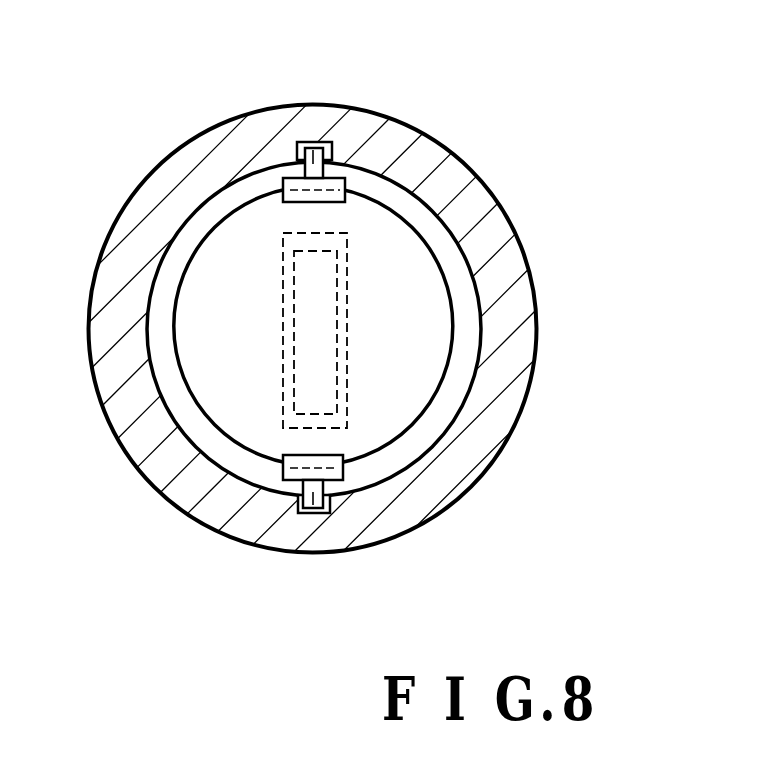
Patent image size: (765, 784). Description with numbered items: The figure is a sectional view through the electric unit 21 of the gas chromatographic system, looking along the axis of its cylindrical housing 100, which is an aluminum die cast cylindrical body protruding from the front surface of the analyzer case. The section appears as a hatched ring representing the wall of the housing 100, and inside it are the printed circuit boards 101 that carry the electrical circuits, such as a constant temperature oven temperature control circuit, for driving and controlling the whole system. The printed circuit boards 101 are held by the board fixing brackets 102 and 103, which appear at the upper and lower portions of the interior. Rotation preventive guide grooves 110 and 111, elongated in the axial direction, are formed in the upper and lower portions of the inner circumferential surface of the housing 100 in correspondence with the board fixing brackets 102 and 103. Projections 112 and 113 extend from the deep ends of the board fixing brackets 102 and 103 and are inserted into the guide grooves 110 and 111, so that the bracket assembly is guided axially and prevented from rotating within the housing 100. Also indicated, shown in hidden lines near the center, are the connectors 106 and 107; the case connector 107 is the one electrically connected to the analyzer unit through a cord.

The electric unit 21 is at (190, 135).
The cylindrical housing 100 is at (507, 308).
The printed circuit boards 101 is at (478, 251).
The board fixing bracket 102 is at (333, 178).
The board fixing bracket 103 is at (297, 484).
The connector 106 is at (337, 392).
The case connector 107 is at (347, 353).
The rotation preventive guide groove 110 is at (321, 141).
The rotation preventive guide groove 111 is at (317, 508).
The projection 112 is at (315, 143).
The projection 113 is at (315, 509).